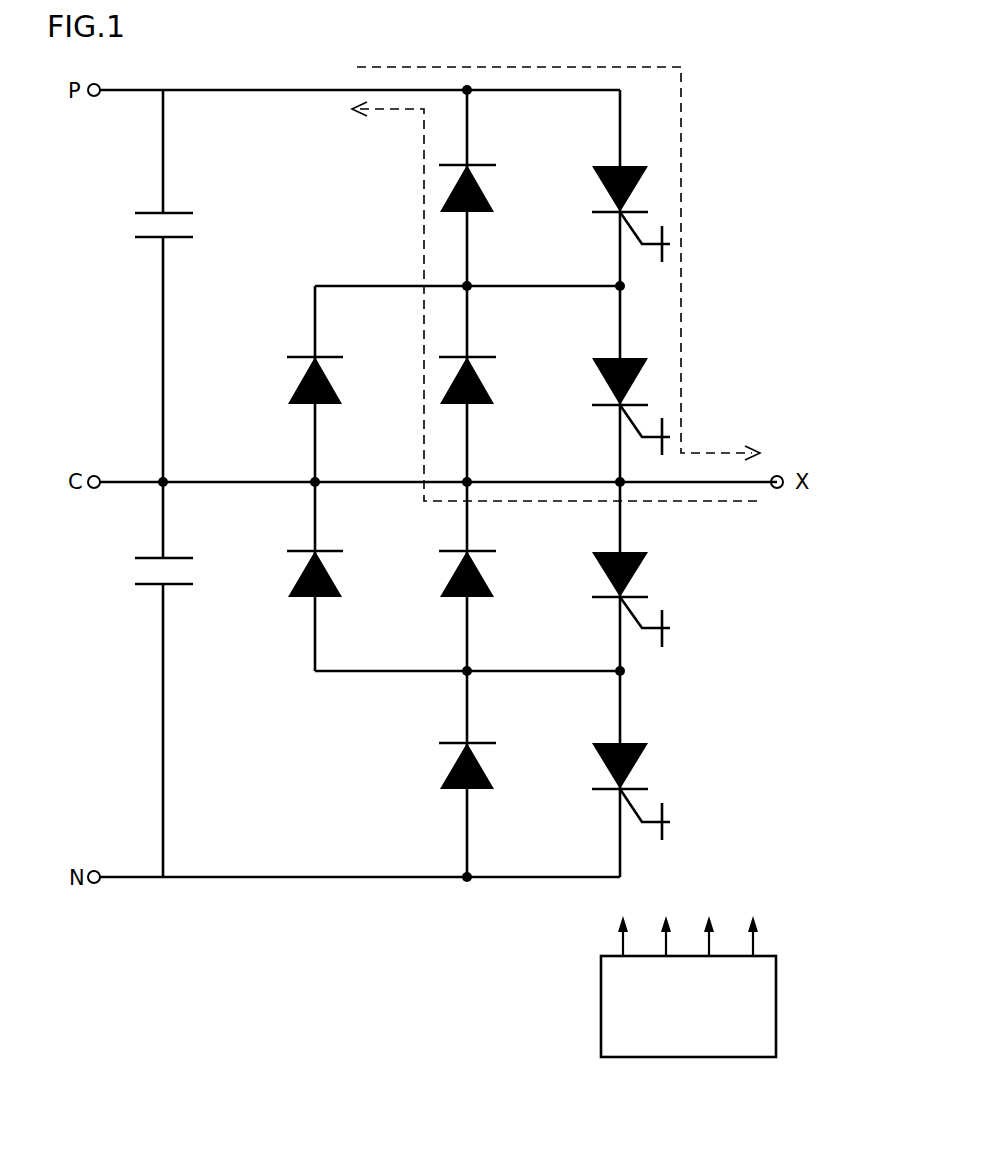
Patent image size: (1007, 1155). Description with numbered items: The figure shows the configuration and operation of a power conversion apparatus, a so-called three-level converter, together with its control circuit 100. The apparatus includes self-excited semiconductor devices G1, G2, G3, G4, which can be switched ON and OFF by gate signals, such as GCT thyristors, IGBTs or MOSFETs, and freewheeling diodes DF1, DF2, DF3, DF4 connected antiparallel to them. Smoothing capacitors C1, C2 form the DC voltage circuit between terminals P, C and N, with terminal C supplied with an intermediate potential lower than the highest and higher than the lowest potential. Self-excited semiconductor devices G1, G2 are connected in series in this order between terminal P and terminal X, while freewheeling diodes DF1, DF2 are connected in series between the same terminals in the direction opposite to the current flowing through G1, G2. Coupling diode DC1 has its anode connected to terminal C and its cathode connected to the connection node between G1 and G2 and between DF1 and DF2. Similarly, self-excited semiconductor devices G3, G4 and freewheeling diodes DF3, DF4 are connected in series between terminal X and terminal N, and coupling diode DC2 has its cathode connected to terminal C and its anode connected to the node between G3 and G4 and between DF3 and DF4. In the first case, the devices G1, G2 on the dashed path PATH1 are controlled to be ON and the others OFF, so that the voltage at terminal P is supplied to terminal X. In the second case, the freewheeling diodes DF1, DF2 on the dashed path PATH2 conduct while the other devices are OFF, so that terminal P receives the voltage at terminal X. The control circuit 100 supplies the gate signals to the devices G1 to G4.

The smoothing capacitor C1 is at (149, 226).
The smoothing capacitor C2 is at (149, 571).
The coupling diode DC1 is at (333, 385).
The coupling diode DC2 is at (333, 578).
The freewheeling diode DF1 is at (486, 190).
The freewheeling diode DF2 is at (486, 385).
The freewheeling diode DF3 is at (486, 578).
The freewheeling diode DF4 is at (486, 772).
The self-excited semiconductor device G1 is at (636, 166).
The self-excited semiconductor device G2 is at (637, 358).
The self-excited semiconductor device G3 is at (637, 552).
The self-excited semiconductor device G4 is at (637, 743).
The path PATH1 is at (723, 453).
The path PATH2 is at (723, 502).
The control circuit 100 is at (776, 1006).